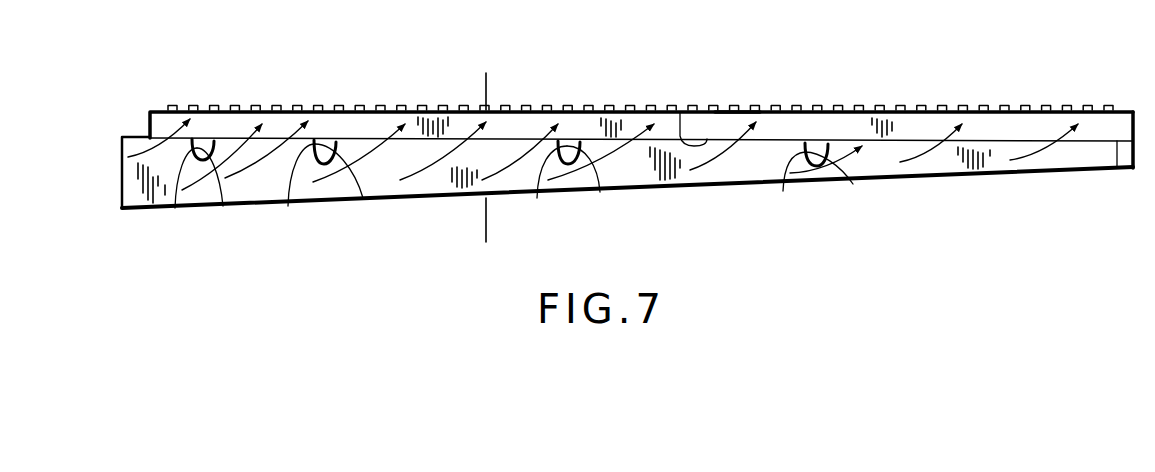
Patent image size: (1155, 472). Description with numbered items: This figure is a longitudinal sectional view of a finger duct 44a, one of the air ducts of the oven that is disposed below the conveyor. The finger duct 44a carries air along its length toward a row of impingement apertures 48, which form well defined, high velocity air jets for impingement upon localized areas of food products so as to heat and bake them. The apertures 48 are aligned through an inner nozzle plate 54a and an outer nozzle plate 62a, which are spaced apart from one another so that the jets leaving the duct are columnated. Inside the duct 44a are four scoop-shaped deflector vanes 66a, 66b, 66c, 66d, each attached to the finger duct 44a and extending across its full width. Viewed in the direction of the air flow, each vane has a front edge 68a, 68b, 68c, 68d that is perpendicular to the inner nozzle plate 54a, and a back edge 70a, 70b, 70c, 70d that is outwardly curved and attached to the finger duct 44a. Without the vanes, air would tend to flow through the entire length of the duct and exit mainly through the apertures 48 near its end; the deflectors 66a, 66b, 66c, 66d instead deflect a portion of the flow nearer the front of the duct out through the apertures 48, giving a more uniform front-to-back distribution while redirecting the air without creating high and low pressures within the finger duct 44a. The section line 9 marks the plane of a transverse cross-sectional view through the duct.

The finger duct 44a is at (544, 77).
The impingement apertures 48 is at (277, 105).
The inner nozzle plate 54a is at (680, 113).
The outer nozzle plate 62a is at (735, 108).
The deflector vane 66a is at (198, 136).
The deflector vane 66b is at (328, 136).
The deflector vane 66c is at (569, 137).
The deflector vane 66d is at (813, 137).
The front edge of deflector 68a is at (175, 208).
The front edge of deflector 68b is at (288, 206).
The front edge of deflector 68c is at (537, 198).
The front edge of deflector 68d is at (783, 191).
The back edge of deflector 70a is at (223, 206).
The back edge of deflector 70b is at (363, 198).
The back edge of deflector 70c is at (600, 192).
The back edge of deflector 70d is at (853, 184).
The section line 9- 9 is at (454, 238).